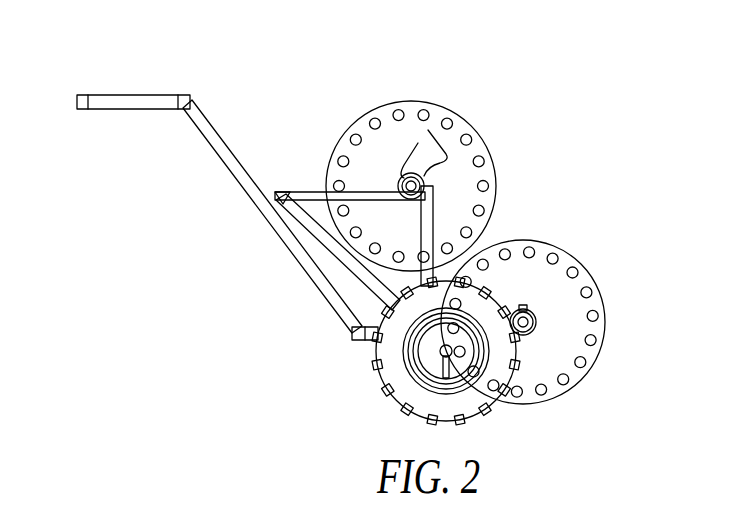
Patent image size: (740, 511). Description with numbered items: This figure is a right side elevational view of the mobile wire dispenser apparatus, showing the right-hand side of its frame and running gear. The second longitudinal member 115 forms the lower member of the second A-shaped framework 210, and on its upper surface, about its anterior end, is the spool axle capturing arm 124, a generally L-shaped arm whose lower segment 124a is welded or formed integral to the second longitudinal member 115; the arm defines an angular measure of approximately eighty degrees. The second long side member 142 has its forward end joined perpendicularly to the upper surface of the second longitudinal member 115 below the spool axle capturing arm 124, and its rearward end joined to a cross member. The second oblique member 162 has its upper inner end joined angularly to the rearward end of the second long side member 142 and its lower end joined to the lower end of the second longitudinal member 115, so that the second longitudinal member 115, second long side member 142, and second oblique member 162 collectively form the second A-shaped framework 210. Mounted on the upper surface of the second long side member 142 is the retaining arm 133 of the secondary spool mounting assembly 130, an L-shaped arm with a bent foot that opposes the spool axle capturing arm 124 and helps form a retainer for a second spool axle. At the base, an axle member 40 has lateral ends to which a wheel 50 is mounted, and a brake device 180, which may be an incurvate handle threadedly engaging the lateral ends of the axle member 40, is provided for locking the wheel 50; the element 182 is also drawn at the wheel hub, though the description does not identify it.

The second A-shaped framework 210 is at (300, 300).
The second long side member 142 is at (278, 190).
The second oblique member 162 is at (310, 242).
The second longitudinal member 115 is at (433, 236).
The spool axle capturing arm 124 is at (468, 138).
The lower segment 124a is at (436, 166).
The retaining arm 133 is at (396, 146).
The secondary spool mounting assembly 130 is at (421, 116).
The brake device 180 is at (470, 370).
The axle member 40 is at (407, 350).
The wheel 50 is at (386, 390).
The shaft 182 is at (453, 365).